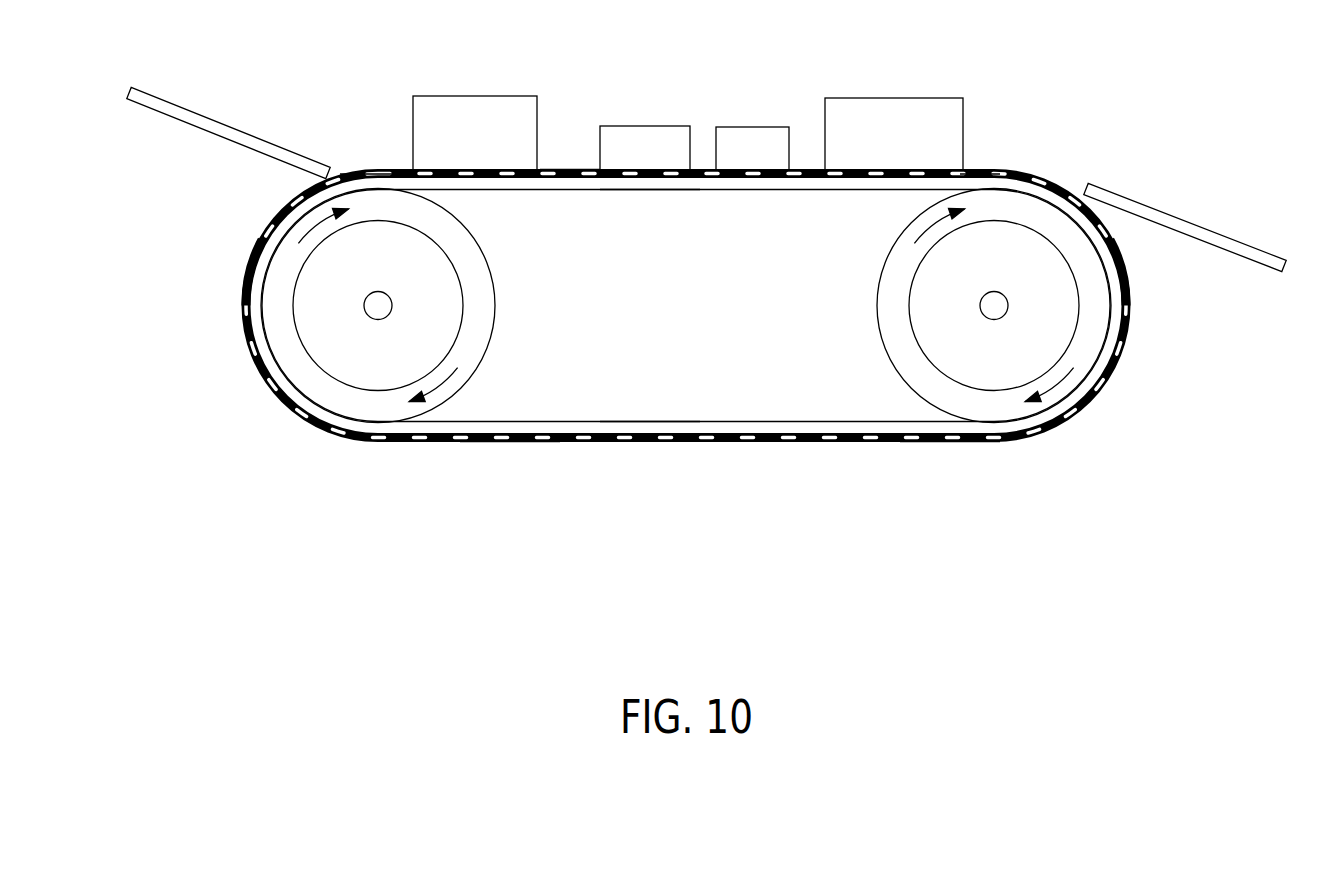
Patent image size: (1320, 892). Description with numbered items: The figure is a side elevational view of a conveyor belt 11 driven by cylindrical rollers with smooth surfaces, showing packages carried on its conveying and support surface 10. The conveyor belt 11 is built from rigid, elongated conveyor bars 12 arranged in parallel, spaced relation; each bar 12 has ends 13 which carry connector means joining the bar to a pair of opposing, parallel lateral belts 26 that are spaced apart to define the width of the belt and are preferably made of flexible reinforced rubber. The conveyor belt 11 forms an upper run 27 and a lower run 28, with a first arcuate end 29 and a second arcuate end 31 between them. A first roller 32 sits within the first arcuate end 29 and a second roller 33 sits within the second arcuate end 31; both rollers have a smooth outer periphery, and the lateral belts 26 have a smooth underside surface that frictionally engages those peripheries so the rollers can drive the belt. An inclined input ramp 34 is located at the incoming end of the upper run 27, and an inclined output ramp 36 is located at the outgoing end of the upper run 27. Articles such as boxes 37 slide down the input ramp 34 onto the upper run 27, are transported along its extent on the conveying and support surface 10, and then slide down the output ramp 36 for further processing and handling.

The conveying and support surface 10 is at (356, 170).
The conveyor belt 11 is at (391, 581).
The conveyor bar 12 is at (1040, 172).
The ends 13 is at (513, 443).
The lateral belts 26 is at (645, 190).
The upper run 27 is at (568, 157).
The lower run 28 is at (948, 453).
The first arcuate end 29 is at (1150, 308).
The second arcuate end 31 is at (229, 292).
The first roller 32 is at (877, 335).
The second roller 33 is at (493, 333).
The input ramp 34 is at (212, 117).
The output ramp 36 is at (1180, 215).
The boxes 37 is at (470, 95).